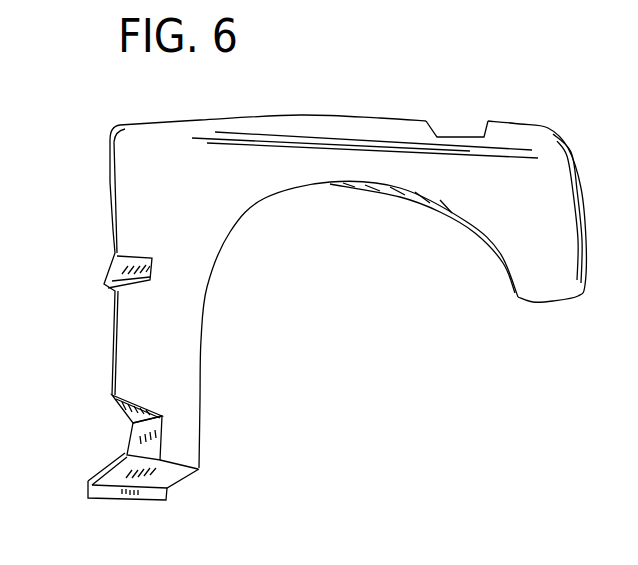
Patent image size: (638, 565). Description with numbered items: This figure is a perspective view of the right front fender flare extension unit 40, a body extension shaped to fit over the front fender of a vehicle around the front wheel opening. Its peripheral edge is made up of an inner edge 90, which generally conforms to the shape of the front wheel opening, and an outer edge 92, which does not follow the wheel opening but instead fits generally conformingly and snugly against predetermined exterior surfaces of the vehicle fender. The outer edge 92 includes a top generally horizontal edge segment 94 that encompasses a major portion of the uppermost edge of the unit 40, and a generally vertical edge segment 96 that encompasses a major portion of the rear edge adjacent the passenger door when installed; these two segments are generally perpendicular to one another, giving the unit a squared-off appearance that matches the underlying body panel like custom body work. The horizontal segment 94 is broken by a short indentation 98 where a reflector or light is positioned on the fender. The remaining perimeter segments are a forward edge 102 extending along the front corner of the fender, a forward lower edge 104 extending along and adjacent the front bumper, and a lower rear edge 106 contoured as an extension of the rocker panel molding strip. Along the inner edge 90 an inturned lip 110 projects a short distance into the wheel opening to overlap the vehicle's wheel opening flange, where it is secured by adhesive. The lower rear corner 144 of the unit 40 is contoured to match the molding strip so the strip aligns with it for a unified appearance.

The right front fender flare extension unit 40 is at (181, 192).
The inner edge 90 is at (230, 232).
The outer edge 92 is at (102, 182).
The top generally horizontal edge segment 94 is at (333, 113).
The generally vertical edge segment 96 is at (112, 243).
The short indentation 98 is at (465, 136).
The forward edge 102 is at (580, 195).
The forward lower edge 104 is at (548, 302).
The lower rear edge 106 is at (128, 494).
The inturned lip 110 is at (452, 218).
The lower rear corner 144 is at (100, 395).